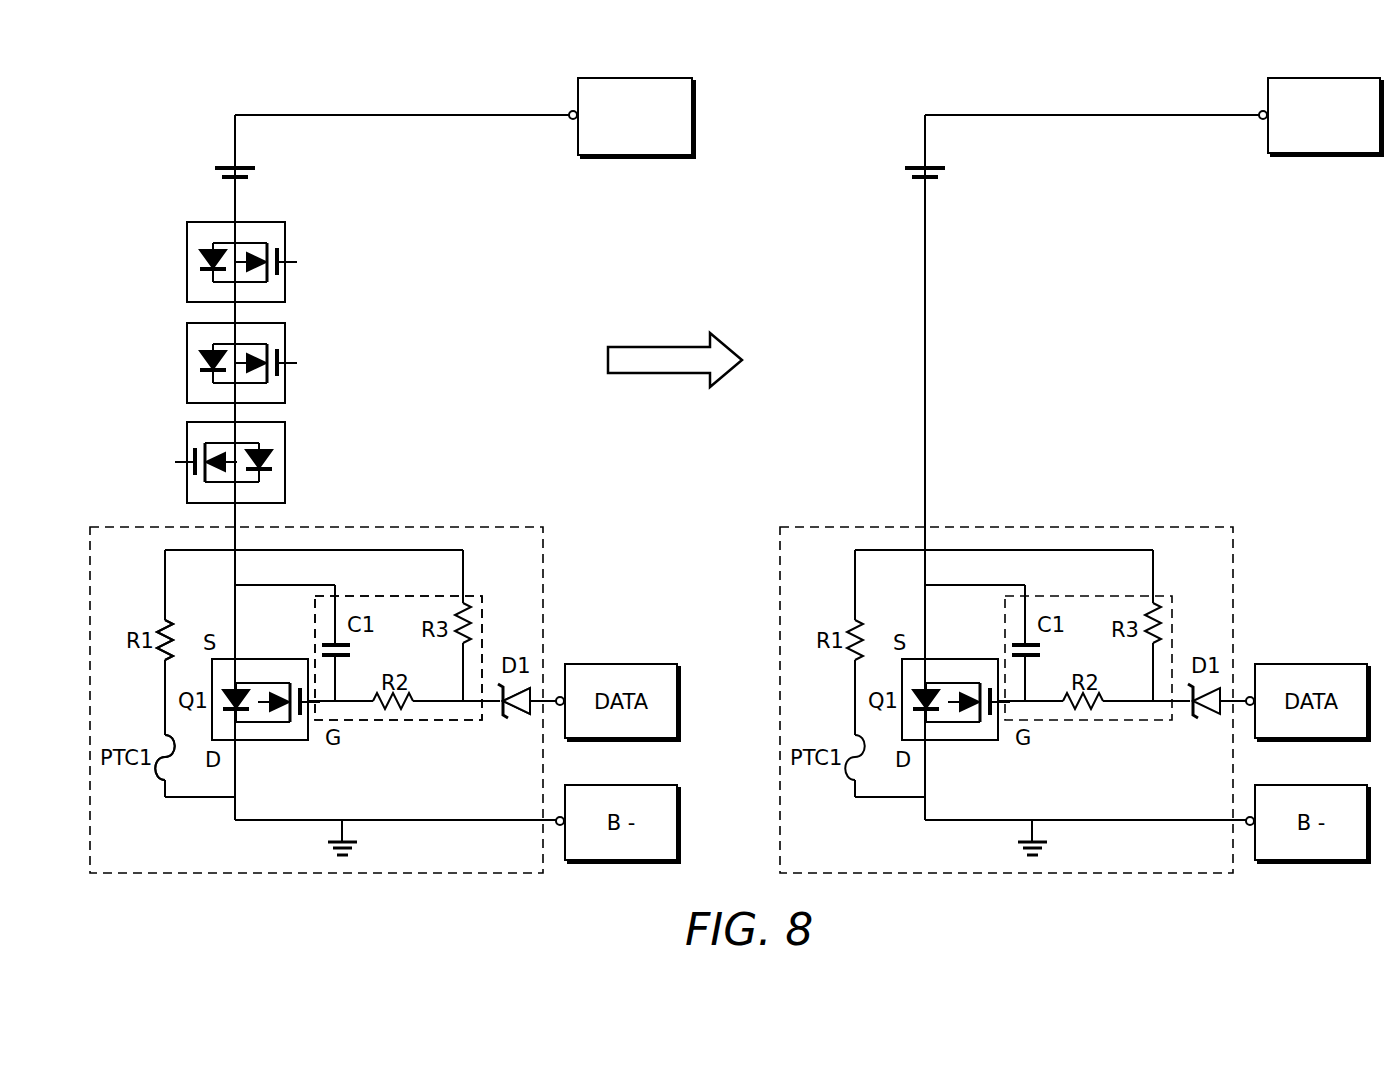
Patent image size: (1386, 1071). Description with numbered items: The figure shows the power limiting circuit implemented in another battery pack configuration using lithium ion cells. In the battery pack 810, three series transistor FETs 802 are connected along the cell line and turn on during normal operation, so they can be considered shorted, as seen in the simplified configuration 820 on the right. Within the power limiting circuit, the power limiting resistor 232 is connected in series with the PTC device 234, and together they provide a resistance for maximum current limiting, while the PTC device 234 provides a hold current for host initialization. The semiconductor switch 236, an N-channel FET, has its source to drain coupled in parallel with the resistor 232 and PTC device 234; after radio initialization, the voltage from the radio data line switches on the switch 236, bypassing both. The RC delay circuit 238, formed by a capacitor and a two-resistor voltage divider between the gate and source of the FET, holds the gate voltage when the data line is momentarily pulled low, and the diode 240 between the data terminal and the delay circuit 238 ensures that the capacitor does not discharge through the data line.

The battery pack 810 is at (153, 103).
The shorted configuration 820 is at (888, 103).
The transistor FETs Q2, Q3, Q4 802 is at (285, 333).
The power limiting resistor 232 is at (163, 618).
The PTC device 234 is at (158, 777).
The semiconductor switch 236 is at (273, 742).
The RC delay circuit 238 is at (400, 722).
The diode 240 is at (510, 716).